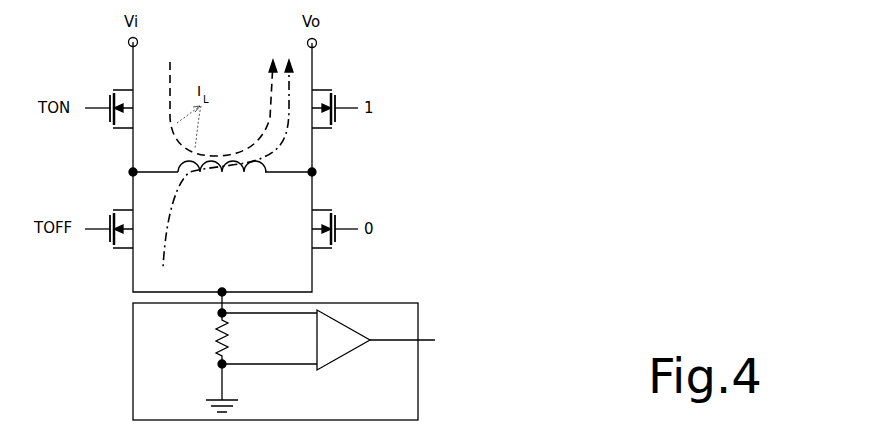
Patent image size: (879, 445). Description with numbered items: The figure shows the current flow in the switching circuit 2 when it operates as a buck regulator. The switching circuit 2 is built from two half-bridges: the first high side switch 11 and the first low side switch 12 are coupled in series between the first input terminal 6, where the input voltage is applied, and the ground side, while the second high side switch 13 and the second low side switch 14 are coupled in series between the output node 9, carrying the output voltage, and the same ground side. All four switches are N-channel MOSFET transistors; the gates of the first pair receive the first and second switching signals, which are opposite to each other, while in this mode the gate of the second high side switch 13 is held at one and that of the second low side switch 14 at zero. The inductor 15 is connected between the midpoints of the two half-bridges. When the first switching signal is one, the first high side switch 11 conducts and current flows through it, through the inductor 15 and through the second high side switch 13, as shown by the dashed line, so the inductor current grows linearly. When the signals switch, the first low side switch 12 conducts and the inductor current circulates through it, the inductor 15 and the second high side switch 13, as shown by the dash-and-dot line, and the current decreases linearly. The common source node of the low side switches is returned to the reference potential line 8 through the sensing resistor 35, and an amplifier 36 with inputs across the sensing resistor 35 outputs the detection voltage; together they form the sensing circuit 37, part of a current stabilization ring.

The switching circuit 2 is at (389, 161).
The first input terminal 6 is at (128, 41).
The reference potential line (ground) 8 is at (236, 400).
The output node 9 is at (317, 43).
The first high side switch 11 is at (113, 90).
The first low side switch 12 is at (113, 210).
The second high side switch 13 is at (328, 90).
The second low side switch 14 is at (326, 210).
The inductor 15 is at (240, 172).
The sensing resistor 35 is at (214, 344).
The amplifier 36 is at (348, 352).
The sensing circuit 37 is at (418, 395).